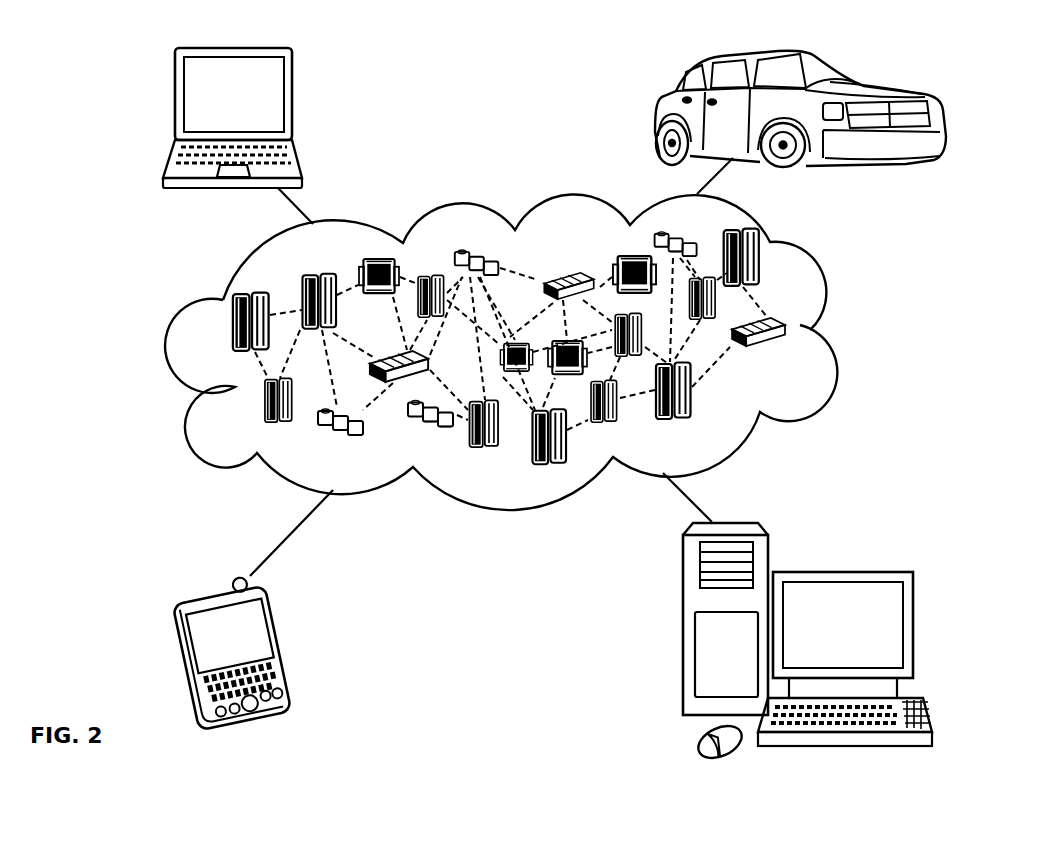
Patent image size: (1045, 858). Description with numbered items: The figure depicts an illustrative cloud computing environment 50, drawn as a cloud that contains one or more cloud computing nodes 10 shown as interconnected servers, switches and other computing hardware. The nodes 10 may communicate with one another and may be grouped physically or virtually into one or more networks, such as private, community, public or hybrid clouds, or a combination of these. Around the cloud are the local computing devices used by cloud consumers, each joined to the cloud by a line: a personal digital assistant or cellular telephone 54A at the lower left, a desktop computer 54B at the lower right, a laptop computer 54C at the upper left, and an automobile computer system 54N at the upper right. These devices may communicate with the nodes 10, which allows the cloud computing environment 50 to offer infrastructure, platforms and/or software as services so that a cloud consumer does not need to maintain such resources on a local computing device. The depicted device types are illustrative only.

The cloud computing nodes 10 is at (556, 347).
The cloud computing environment 50 is at (840, 328).
The personal digital assistant (PDA) or cellular telephone 54A is at (283, 649).
The desktop computer 54B is at (843, 572).
The laptop computer 54C is at (293, 99).
The automobile computer system 54N is at (657, 113).